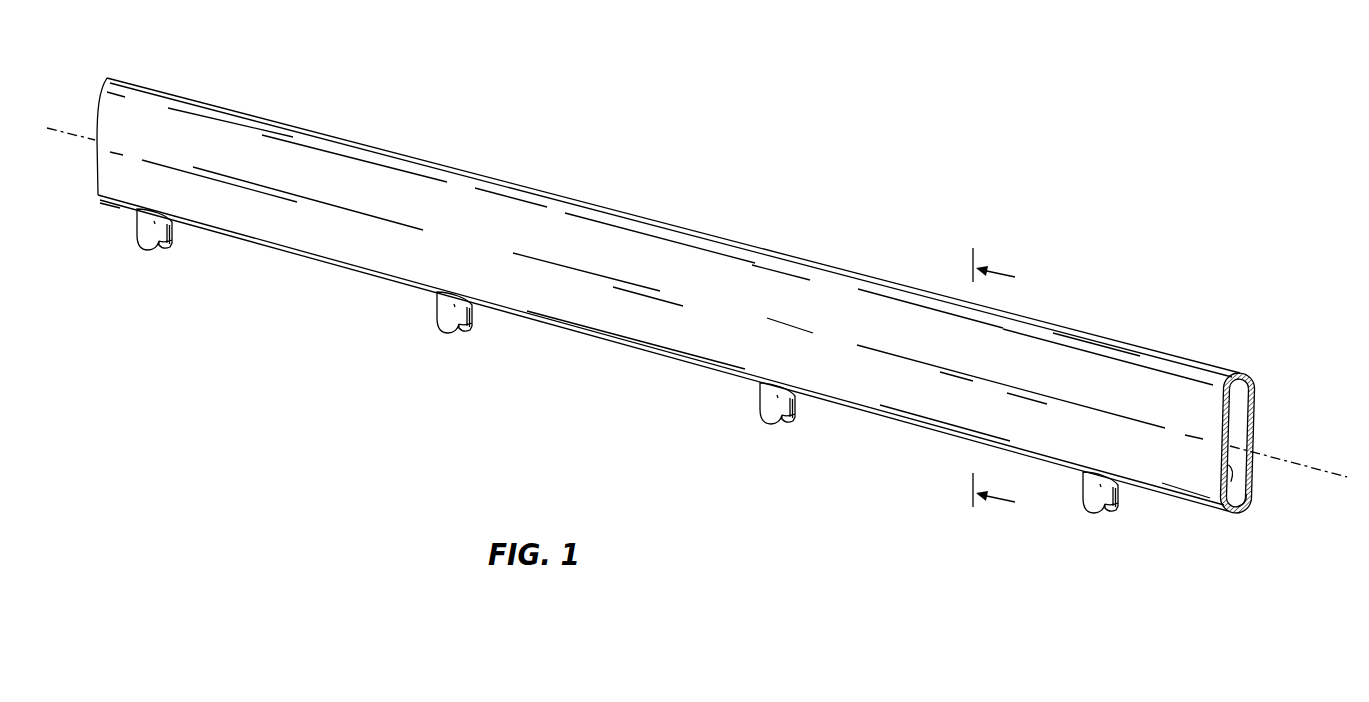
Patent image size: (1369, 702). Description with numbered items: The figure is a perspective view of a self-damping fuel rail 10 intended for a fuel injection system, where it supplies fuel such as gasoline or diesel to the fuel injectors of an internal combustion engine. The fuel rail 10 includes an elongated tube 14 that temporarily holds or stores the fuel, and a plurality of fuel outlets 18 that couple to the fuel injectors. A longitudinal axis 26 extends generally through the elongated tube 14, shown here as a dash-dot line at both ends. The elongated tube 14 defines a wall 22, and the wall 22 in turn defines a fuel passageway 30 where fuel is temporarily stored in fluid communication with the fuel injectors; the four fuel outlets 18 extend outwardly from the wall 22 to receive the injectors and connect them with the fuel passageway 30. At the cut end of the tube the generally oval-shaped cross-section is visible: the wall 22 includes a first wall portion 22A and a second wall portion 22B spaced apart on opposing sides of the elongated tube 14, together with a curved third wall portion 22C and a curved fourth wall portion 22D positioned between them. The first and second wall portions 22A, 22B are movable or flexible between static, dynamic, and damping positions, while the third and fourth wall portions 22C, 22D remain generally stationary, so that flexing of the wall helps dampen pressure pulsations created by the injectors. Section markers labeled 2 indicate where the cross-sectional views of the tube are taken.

The self-damping fuel rail 10 is at (686, 95).
The elongated tube 14 is at (481, 168).
The fuel outlets 18 is at (141, 229).
The wall 22 is at (1167, 367).
The first wall portion 22A is at (1221, 495).
The second wall portion 22B is at (1251, 427).
The third wall portion 22C is at (1248, 372).
The fourth wall portion 22D is at (1237, 516).
The longitudinal axis 26 is at (1281, 461).
The fuel passageway 30 is at (1252, 506).
The section line 2- 2 is at (1004, 381).